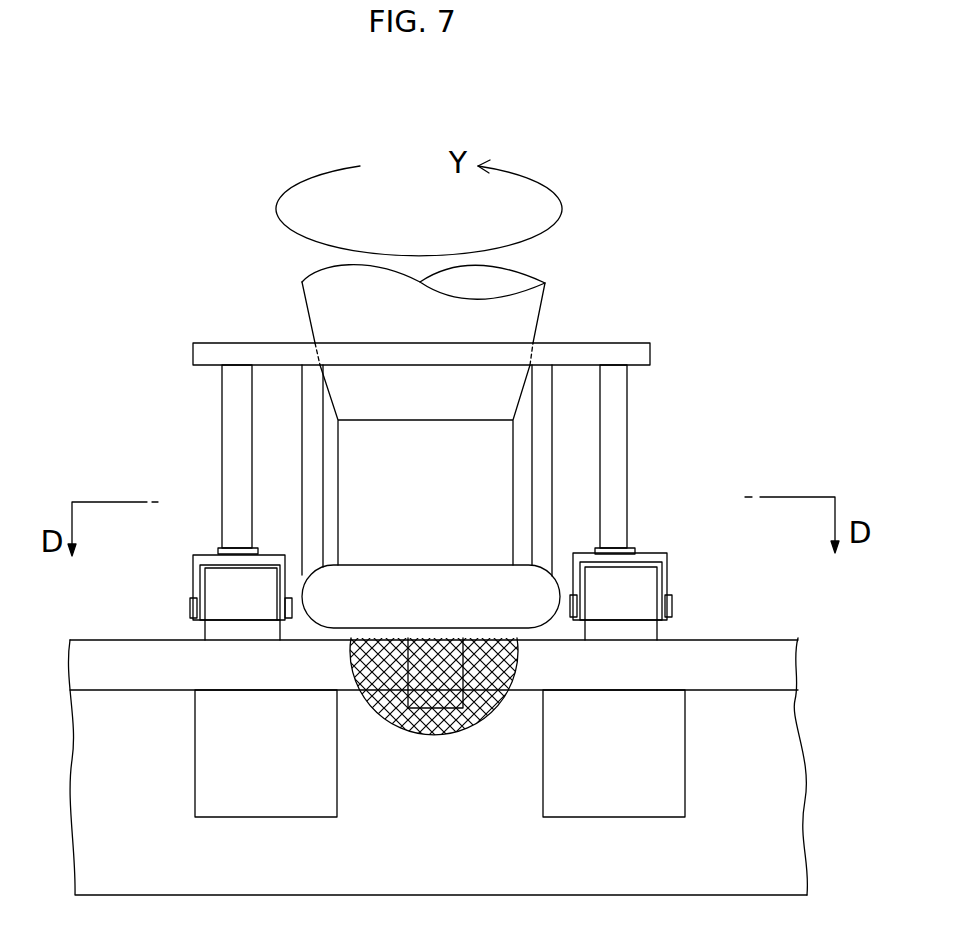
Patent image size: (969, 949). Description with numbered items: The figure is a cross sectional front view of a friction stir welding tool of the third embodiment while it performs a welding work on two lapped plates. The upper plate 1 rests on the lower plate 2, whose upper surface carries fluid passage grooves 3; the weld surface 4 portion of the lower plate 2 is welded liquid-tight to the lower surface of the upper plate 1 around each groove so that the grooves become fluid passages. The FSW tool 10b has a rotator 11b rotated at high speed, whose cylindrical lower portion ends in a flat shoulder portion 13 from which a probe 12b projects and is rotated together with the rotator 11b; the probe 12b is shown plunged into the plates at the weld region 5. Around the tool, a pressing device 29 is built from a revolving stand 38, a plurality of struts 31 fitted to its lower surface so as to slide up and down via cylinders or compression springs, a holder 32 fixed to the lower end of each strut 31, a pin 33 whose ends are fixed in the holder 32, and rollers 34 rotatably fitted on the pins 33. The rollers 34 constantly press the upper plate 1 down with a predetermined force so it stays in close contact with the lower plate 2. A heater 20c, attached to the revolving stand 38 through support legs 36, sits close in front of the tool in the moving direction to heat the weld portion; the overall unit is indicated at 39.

The upper plate 1 is at (765, 638).
The lower plate 2 is at (703, 845).
The fluid passage grooves 3 is at (270, 802).
The weld surface 4 is at (763, 690).
The via hole 5 is at (395, 722).
The FSW tool 10b is at (459, 358).
The rotator 11b is at (350, 323).
The probe 12b is at (389, 751).
The shoulder portion 13 is at (352, 657).
The heater 20c is at (408, 611).
The pressing device 29 is at (509, 502).
The struts 31 is at (622, 443).
The holder 32 is at (662, 553).
The pin 33 is at (670, 602).
The rollers 34 is at (637, 628).
The support legs 36 is at (302, 468).
The revolving stand 38 is at (612, 342).
The moving unit 39 is at (495, 417).